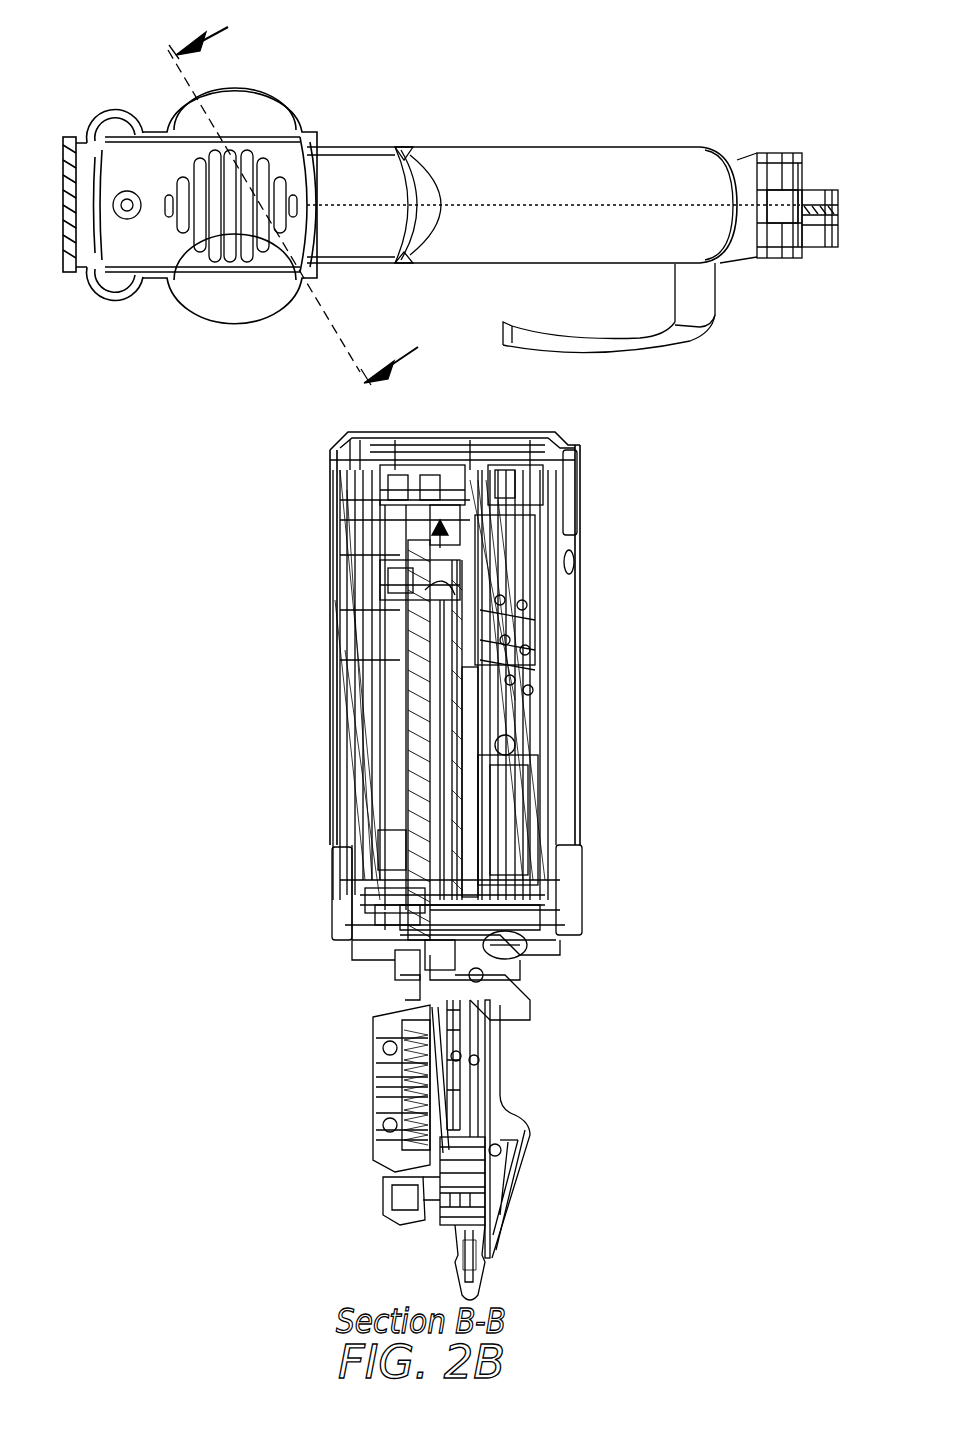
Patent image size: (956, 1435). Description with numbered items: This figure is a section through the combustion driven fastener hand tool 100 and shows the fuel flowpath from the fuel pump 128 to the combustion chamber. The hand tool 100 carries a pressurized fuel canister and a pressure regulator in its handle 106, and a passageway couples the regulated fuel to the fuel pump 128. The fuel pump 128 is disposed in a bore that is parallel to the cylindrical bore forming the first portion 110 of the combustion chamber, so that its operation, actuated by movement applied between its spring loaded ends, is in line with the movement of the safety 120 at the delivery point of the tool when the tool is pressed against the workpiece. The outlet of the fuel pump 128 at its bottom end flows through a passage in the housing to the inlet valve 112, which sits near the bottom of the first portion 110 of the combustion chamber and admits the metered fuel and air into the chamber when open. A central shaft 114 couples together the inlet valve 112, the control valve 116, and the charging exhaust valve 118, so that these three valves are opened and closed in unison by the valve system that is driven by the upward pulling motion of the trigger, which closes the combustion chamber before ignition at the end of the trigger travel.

The hand tool 100 is at (450, 653).
The handle 106 is at (555, 147).
The first portion of the combustion chamber 110 is at (400, 765).
The inlet valve 112 is at (385, 912).
The central shaft 114 is at (418, 705).
The control valve 116 is at (385, 580).
The charging exhaust valve 118 is at (385, 500).
The safety 120 is at (480, 1293).
The fuel pump 128 is at (517, 580).